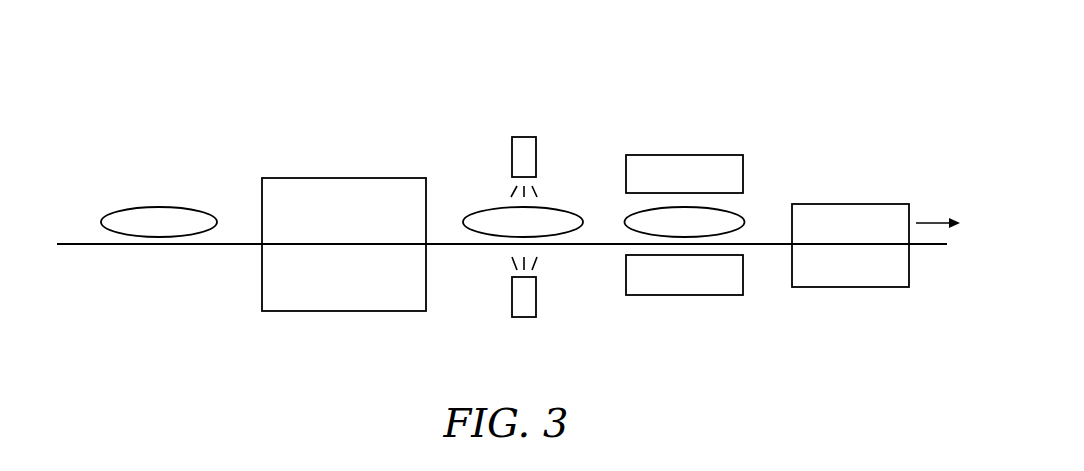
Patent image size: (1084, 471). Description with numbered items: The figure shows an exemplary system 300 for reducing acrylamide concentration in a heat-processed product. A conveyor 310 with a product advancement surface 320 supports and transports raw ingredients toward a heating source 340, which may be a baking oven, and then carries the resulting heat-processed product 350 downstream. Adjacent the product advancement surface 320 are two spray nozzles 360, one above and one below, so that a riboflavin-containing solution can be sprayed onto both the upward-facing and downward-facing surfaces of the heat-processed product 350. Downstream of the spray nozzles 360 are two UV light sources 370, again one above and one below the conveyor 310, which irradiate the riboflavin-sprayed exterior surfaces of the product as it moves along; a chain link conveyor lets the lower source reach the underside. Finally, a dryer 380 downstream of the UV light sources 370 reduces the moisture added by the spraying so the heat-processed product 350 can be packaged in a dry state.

The system for reducing acrylamide concentration 300 is at (636, 82).
The conveyor 310 is at (222, 256).
The product advancement surface 320 is at (87, 244).
The heating source 340 is at (158, 207).
The heat-processed product 350 is at (490, 208).
The spray nozzle 360 is at (524, 137).
The UV light source 370 is at (684, 154).
The dryer 380 is at (851, 204).